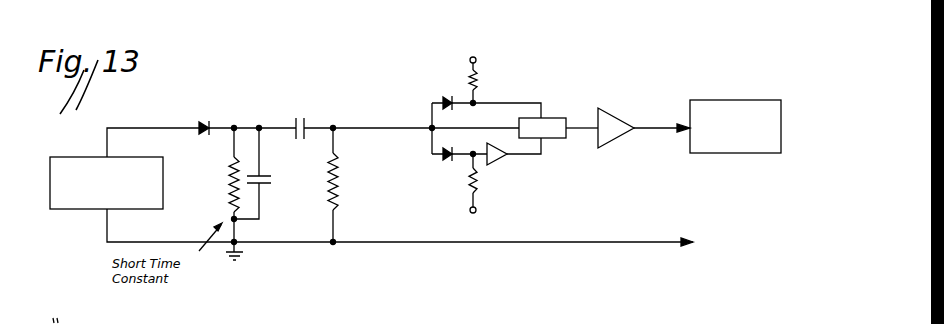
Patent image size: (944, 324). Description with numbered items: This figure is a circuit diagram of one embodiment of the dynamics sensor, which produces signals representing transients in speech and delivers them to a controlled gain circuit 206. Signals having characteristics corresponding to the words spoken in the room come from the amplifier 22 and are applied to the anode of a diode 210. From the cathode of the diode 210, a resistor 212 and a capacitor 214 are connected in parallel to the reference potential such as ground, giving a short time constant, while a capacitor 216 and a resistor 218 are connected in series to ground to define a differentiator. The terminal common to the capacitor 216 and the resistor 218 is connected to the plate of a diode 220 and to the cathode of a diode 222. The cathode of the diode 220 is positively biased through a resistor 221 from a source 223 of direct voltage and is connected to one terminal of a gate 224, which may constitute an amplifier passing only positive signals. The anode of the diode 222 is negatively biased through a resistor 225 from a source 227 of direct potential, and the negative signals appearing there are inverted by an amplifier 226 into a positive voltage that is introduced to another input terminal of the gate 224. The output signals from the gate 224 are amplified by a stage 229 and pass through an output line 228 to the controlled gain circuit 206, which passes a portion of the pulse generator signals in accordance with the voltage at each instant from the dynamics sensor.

The amplifier 22 is at (132, 157).
The controlled gain circuit 206 is at (790, 84).
The diode 210 is at (208, 107).
The resistor 212 is at (231, 190).
The capacitor 214 is at (266, 184).
The capacitor 216 is at (296, 138).
The resistor 218 is at (338, 190).
The diode 220 is at (447, 107).
The resistor 221 is at (478, 80).
The diode 222 is at (450, 161).
The source of direct voltage 223 is at (470, 60).
The gate 224 is at (576, 98).
The resistor 225 is at (469, 180).
The amplifier 226 is at (493, 165).
The source of direct potential 227 is at (470, 211).
The output line 228 is at (661, 119).
The stage 229 is at (613, 138).